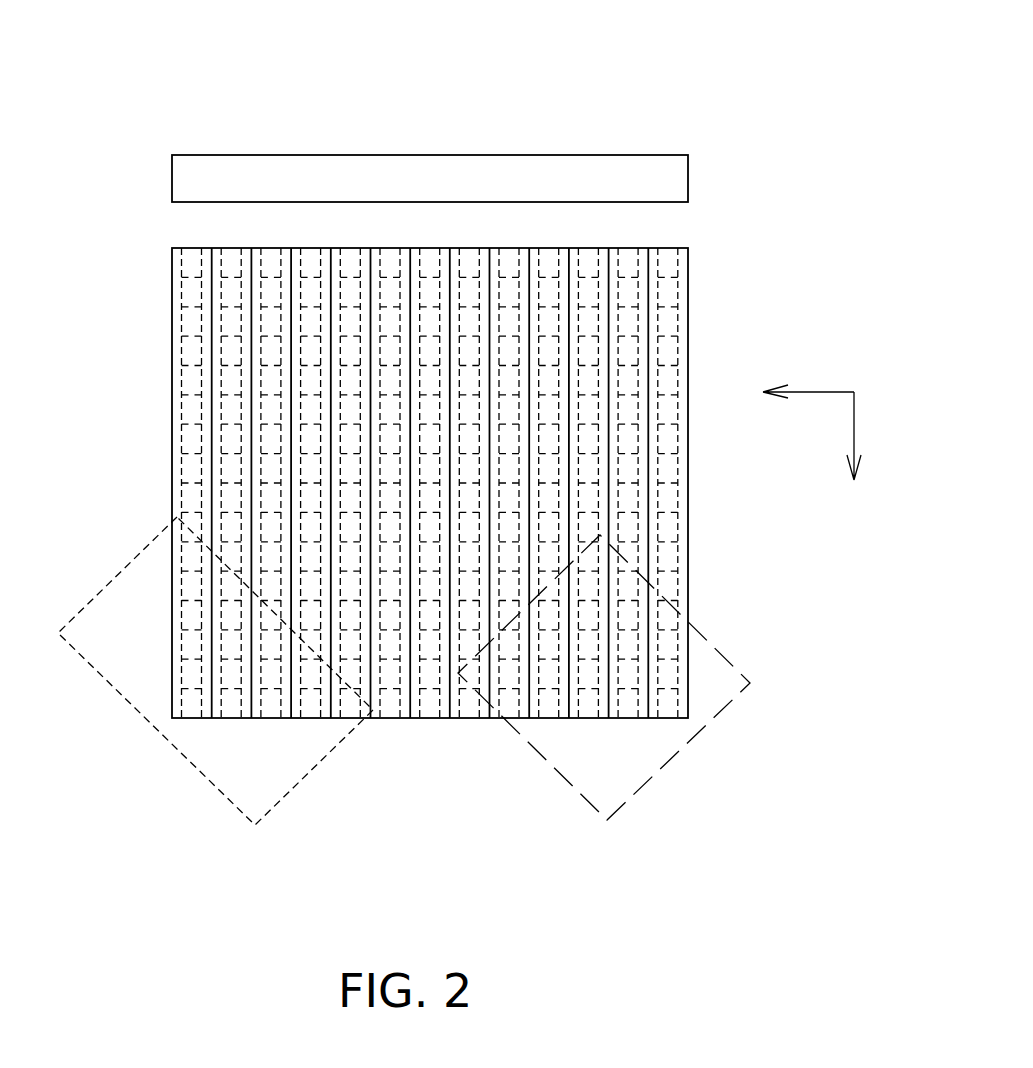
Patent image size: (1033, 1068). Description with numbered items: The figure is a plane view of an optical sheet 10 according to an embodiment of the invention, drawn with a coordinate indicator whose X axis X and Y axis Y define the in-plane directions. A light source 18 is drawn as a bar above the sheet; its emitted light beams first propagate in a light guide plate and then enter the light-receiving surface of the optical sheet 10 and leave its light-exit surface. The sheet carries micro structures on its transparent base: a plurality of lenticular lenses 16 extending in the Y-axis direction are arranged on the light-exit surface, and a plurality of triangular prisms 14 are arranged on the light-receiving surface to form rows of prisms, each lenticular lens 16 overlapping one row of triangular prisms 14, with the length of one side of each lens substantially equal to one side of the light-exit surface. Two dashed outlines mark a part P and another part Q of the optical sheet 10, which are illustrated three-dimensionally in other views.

The optical sheet 10 is at (688, 247).
The triangular prisms 14 is at (182, 405).
The lenticular lenses 16 is at (210, 327).
The light source 18 is at (172, 178).
The part Q is at (120, 577).
The part P is at (680, 750).
The X-axis X is at (798, 392).
The Y-axis Y is at (853, 452).